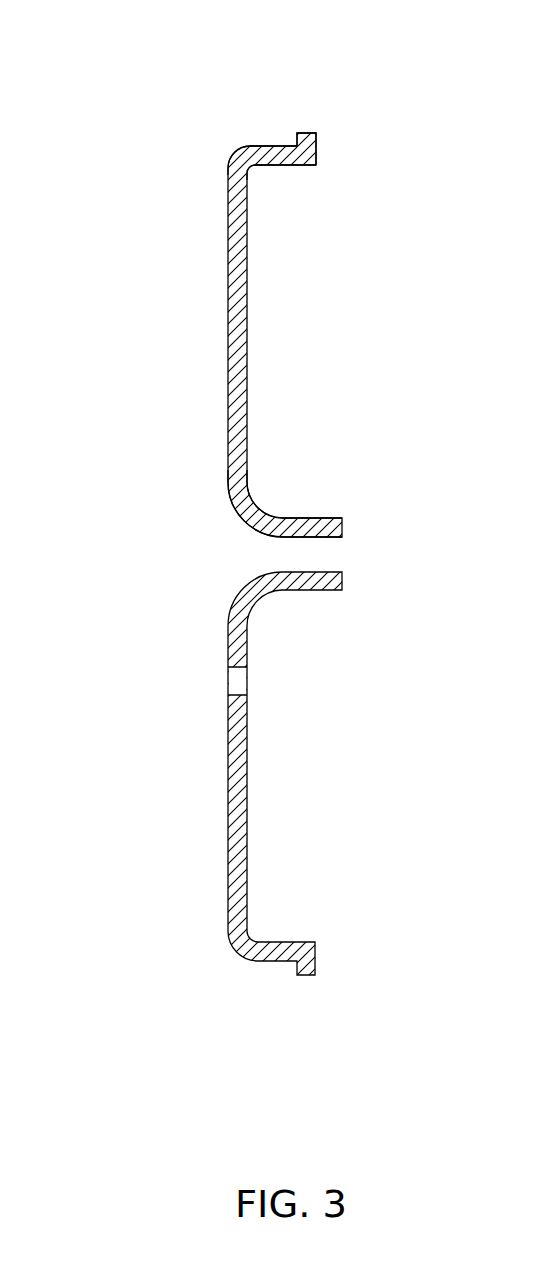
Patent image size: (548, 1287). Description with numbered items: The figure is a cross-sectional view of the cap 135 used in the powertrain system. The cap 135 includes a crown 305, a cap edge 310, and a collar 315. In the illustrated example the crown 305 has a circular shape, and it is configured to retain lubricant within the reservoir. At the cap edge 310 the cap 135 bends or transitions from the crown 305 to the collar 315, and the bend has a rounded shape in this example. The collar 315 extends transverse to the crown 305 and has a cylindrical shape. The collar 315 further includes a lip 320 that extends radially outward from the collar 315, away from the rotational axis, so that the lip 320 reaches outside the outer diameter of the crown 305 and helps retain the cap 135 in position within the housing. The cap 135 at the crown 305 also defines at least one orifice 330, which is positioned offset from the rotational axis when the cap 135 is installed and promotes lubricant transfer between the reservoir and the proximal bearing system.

The crown 305 is at (274, 643).
The cap edge 310 is at (238, 160).
The collar 315 is at (278, 143).
The lip 320 is at (303, 133).
The cap 135 is at (243, 457).
The orifice 330 is at (233, 681).